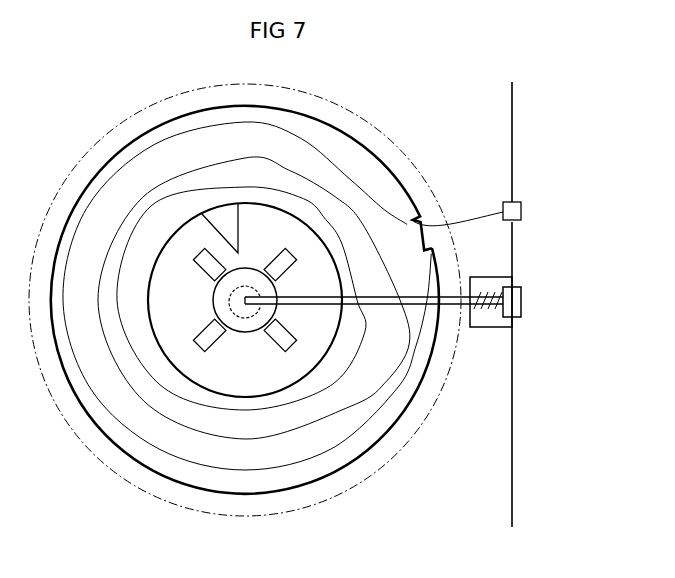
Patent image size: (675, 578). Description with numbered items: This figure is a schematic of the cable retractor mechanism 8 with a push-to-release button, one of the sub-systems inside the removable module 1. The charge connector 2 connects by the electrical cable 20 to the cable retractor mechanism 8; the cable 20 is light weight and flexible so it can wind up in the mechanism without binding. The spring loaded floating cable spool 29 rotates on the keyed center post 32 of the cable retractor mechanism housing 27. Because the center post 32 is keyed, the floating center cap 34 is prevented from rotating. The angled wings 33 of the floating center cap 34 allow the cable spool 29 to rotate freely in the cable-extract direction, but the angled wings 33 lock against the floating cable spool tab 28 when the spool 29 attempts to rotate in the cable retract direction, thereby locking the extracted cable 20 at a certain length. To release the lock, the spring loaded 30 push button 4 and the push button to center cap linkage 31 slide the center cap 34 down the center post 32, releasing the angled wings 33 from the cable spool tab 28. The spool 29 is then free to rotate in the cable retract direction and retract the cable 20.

The cable retractor mechanism 8 is at (357, 103).
The removable module 1 is at (515, 91).
The electrical cable 20 is at (296, 132).
The cable retractor mechanism housing 27 is at (393, 172).
The charge connector 2 is at (523, 211).
The floating cable spool tab 28 is at (238, 236).
The spring loaded floating cable spool 29 is at (338, 270).
The release button 4 is at (521, 300).
The spring 30 is at (488, 311).
The push button to center cap linkage 31 is at (455, 307).
The keyed center post 32 is at (262, 308).
The angled wings 33 is at (297, 347).
The floating center cap 34 is at (242, 333).